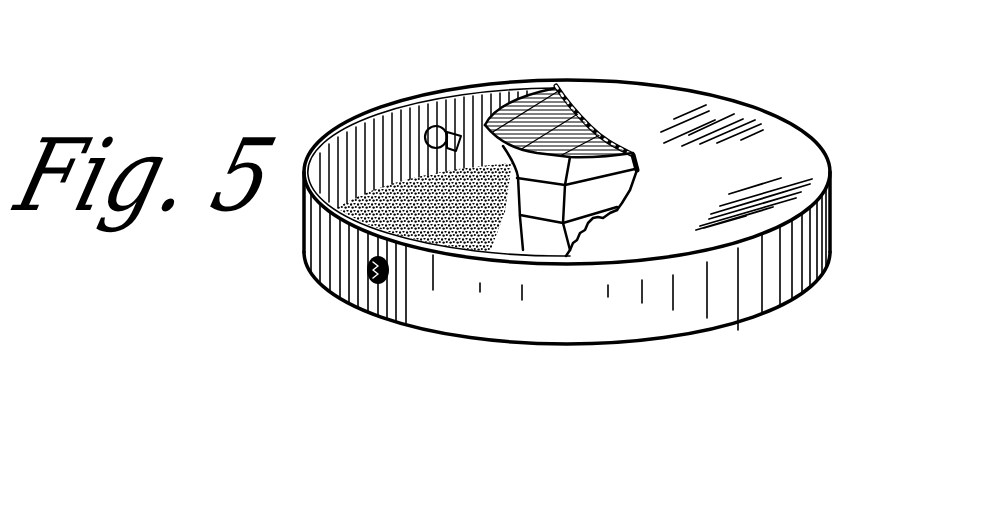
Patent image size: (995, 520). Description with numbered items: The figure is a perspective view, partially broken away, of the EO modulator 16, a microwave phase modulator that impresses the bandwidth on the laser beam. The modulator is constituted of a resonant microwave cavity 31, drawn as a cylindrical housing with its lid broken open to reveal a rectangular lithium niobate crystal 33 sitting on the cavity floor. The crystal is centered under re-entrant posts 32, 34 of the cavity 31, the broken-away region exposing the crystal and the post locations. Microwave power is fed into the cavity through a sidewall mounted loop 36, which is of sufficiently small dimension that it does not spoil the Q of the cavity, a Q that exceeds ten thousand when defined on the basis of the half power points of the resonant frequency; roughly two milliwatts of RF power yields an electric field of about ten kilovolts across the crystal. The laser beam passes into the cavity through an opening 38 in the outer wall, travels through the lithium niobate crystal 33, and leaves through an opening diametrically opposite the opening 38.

The EO modulator 16 is at (745, 102).
The resonant microwave cavity 31 is at (383, 326).
The re-entrant post 32 is at (532, 168).
The LiNbO3 crystal 33 is at (586, 245).
The re-entrant post 34 is at (600, 226).
The sidewall mounted loop 36 is at (373, 47).
The opening 38 is at (366, 282).